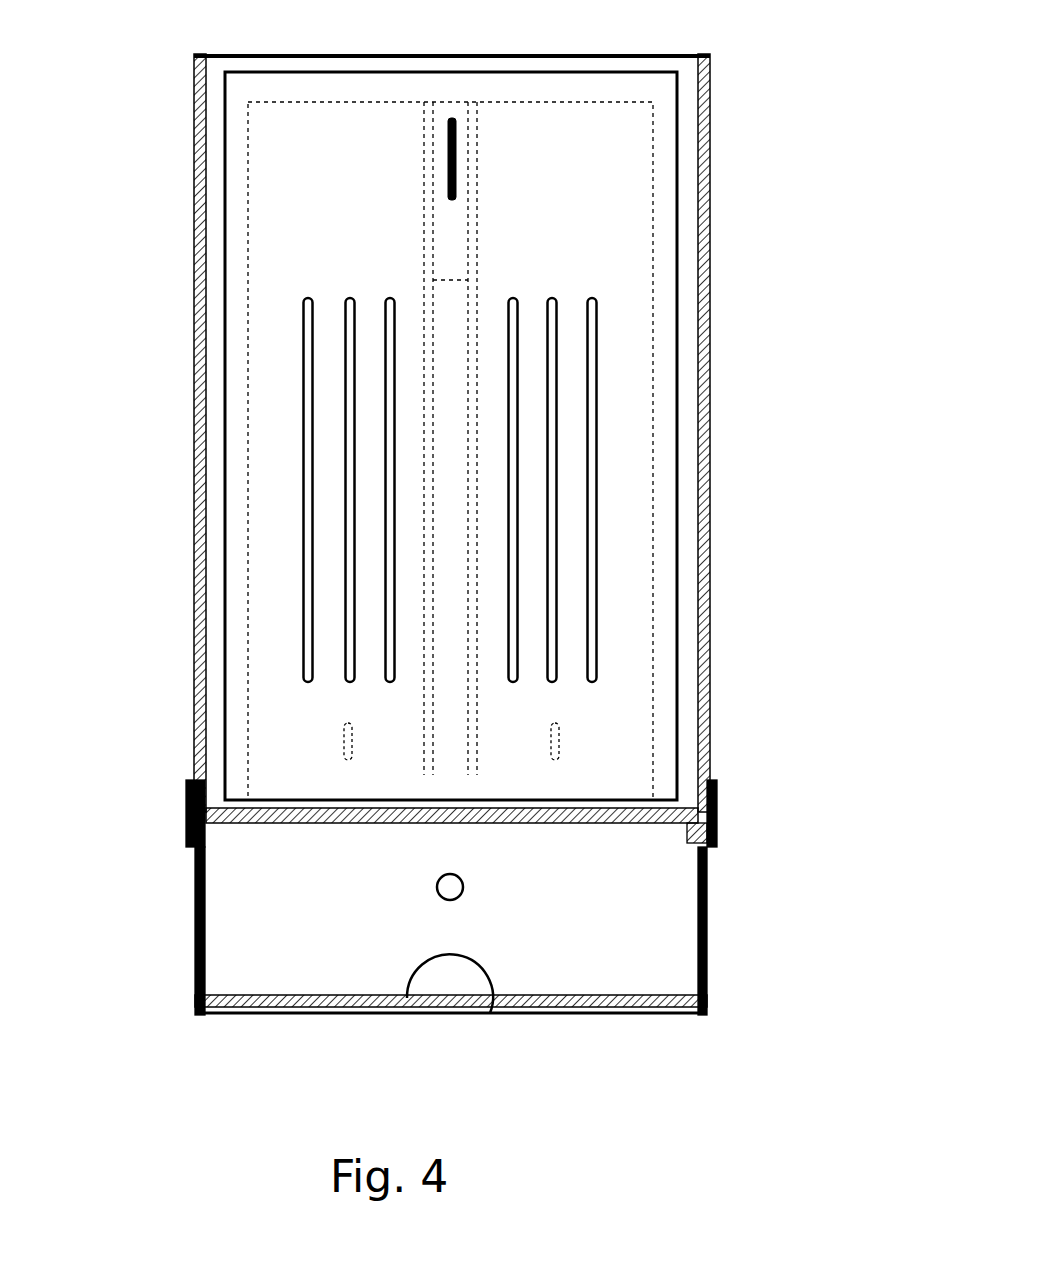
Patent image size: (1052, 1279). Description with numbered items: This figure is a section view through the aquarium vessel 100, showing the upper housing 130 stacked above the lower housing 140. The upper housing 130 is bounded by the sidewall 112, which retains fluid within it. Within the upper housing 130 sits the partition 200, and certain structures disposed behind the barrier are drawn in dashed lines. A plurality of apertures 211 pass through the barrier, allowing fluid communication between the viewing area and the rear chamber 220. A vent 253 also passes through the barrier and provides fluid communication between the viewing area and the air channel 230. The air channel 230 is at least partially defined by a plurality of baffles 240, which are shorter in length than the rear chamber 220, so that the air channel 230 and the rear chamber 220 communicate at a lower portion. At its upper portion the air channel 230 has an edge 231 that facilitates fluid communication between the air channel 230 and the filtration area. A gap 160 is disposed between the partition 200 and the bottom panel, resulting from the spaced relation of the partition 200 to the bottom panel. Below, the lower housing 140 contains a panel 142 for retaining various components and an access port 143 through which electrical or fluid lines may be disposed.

The vessel 100 is at (897, 96).
The sidewall 112 is at (708, 311).
The upper housing 130 is at (140, 411).
The lower housing 140 is at (153, 956).
The panel 142 is at (594, 994).
The access port 143 is at (495, 1005).
The gap 160 is at (612, 806).
The partition 200 is at (672, 90).
The apertures 211 is at (533, 300).
The rear chamber 220 is at (312, 150).
The air channel 230 is at (455, 470).
The edge 231 is at (452, 270).
The baffles 240 is at (473, 663).
The vent 253 is at (453, 104).